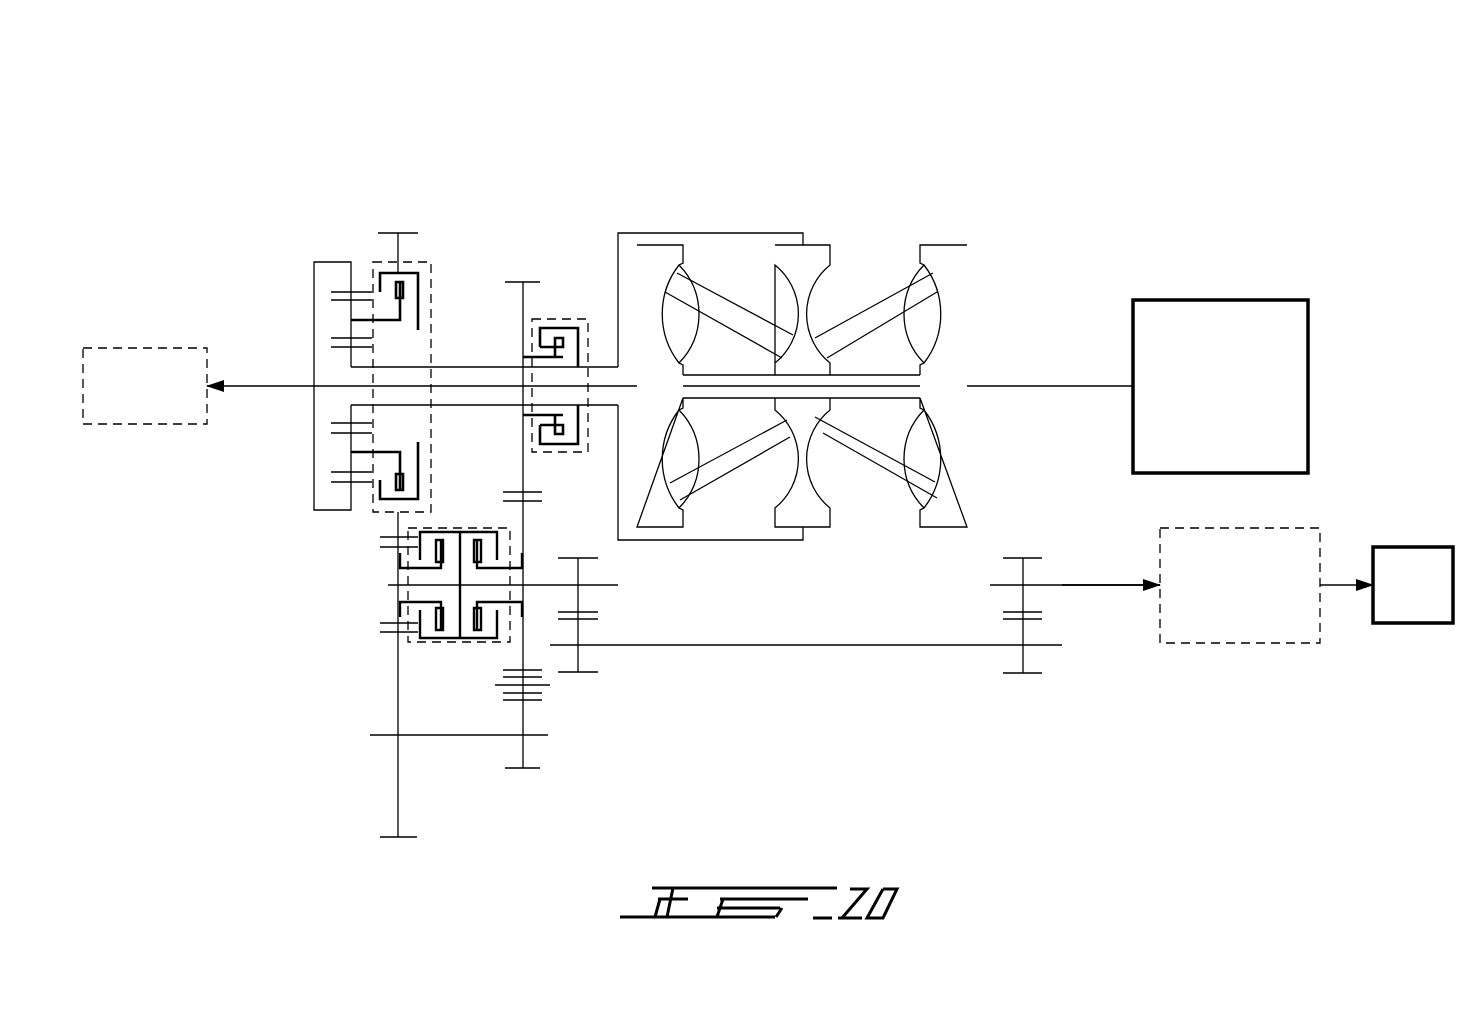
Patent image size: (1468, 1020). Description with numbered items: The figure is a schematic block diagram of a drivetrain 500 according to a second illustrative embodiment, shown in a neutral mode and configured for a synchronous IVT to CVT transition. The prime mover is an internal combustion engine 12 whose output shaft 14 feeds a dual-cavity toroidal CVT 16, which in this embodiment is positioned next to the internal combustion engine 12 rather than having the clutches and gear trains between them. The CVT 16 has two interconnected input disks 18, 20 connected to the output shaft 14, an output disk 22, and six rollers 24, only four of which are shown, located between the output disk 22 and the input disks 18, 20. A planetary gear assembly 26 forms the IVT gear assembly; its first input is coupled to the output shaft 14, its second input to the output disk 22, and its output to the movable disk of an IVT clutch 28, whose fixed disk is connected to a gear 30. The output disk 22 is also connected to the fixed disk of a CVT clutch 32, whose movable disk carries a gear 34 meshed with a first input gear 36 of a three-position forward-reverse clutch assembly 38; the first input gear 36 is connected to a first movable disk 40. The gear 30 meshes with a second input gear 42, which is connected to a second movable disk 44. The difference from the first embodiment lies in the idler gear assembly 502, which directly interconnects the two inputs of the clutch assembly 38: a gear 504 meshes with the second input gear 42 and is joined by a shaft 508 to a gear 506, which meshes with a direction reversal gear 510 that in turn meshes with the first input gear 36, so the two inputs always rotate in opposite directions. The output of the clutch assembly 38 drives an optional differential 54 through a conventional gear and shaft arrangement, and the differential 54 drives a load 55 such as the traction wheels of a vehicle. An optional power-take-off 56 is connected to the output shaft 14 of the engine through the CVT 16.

The drivetrain 500 is at (960, 137).
The internal combustion engine 12 is at (1222, 298).
The output shaft 14 is at (1085, 385).
The dual-cavity toroidal CVT 16 is at (838, 368).
The input disk 18 is at (657, 253).
The input disk 20 is at (967, 312).
The output disk 22 is at (812, 518).
The rollers 24 is at (883, 463).
The planetary gear assembly 26 is at (328, 262).
The IVT clutch 28 is at (428, 262).
The gear 30 is at (393, 524).
The CVT clutch 32 is at (565, 319).
The gear 34 is at (525, 478).
The first input gear 36 is at (525, 522).
The three-position forward-reverse clutch assembly 38 is at (452, 643).
The first movable disk 40 is at (480, 643).
The second input gear 42 is at (398, 560).
The second movable disk 44 is at (438, 632).
The differential 54 is at (1240, 645).
The load 55 is at (1413, 546).
The power-take-off 56 is at (147, 347).
The idler gear assembly 502 is at (510, 805).
The gear 504 is at (398, 783).
The gear 506 is at (525, 748).
The shaft 508 is at (448, 736).
The direction reversal gear 510 is at (527, 688).